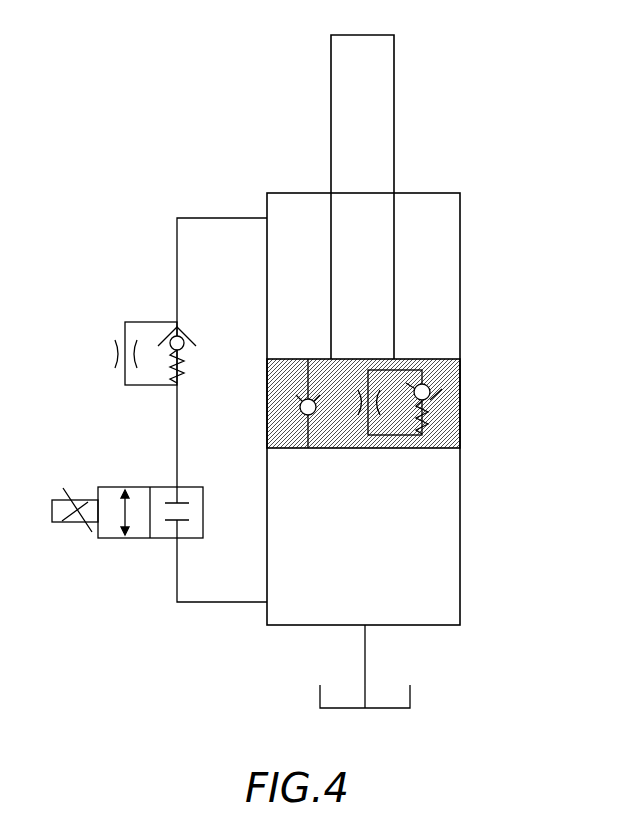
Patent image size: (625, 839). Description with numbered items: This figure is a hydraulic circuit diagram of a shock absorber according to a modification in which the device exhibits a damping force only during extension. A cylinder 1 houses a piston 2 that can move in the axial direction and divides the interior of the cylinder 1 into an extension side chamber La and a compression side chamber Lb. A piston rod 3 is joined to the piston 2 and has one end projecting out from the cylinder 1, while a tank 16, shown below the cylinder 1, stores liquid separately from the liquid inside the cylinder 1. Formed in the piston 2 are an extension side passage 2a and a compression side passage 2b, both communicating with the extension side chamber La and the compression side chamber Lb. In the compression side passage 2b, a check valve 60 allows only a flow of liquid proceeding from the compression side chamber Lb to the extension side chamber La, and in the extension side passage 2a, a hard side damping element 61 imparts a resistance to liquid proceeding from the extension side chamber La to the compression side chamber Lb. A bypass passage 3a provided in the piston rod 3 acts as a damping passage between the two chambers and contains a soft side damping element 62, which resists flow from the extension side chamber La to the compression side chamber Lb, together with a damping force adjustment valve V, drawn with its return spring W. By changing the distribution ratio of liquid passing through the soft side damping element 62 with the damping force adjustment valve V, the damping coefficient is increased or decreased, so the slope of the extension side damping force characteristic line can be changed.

The cylinder 1 is at (460, 250).
The piston 2 is at (463, 412).
The extension side passage 2a is at (430, 450).
The compression side passage 2b is at (301, 428).
The piston rod 3 is at (394, 145).
The bypass passage 3a is at (177, 272).
The tank 16 is at (410, 690).
The check valve 60 is at (297, 398).
The hard side damping element 61 is at (432, 384).
The soft side damping element 62 is at (125, 329).
The damping force adjustment valve V is at (112, 487).
The spring W is at (247, 505).
The extension side chamber La is at (318, 279).
The compression side chamber Lb is at (377, 545).